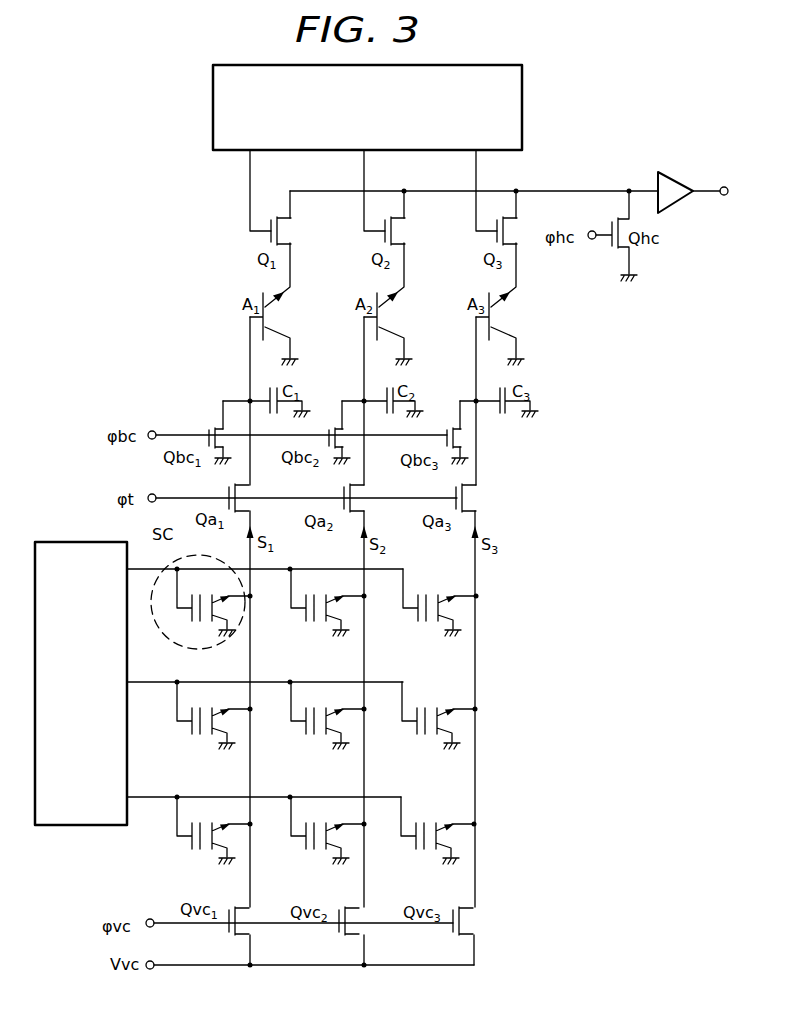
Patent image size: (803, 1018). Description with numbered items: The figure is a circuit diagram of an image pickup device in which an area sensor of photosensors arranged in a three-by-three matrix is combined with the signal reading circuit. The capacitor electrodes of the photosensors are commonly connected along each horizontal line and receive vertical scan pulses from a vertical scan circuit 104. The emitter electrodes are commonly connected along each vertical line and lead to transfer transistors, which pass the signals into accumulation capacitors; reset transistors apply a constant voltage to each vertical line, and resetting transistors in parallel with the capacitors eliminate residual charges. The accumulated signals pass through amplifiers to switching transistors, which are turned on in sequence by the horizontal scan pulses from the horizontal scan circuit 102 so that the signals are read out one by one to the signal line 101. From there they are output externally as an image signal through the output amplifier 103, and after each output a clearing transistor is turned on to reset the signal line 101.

The signal line 101 is at (573, 189).
The horizontal scan circuit 102 is at (522, 72).
The output amplifier 103 is at (676, 176).
The vertical scan circuit 104 is at (73, 826).